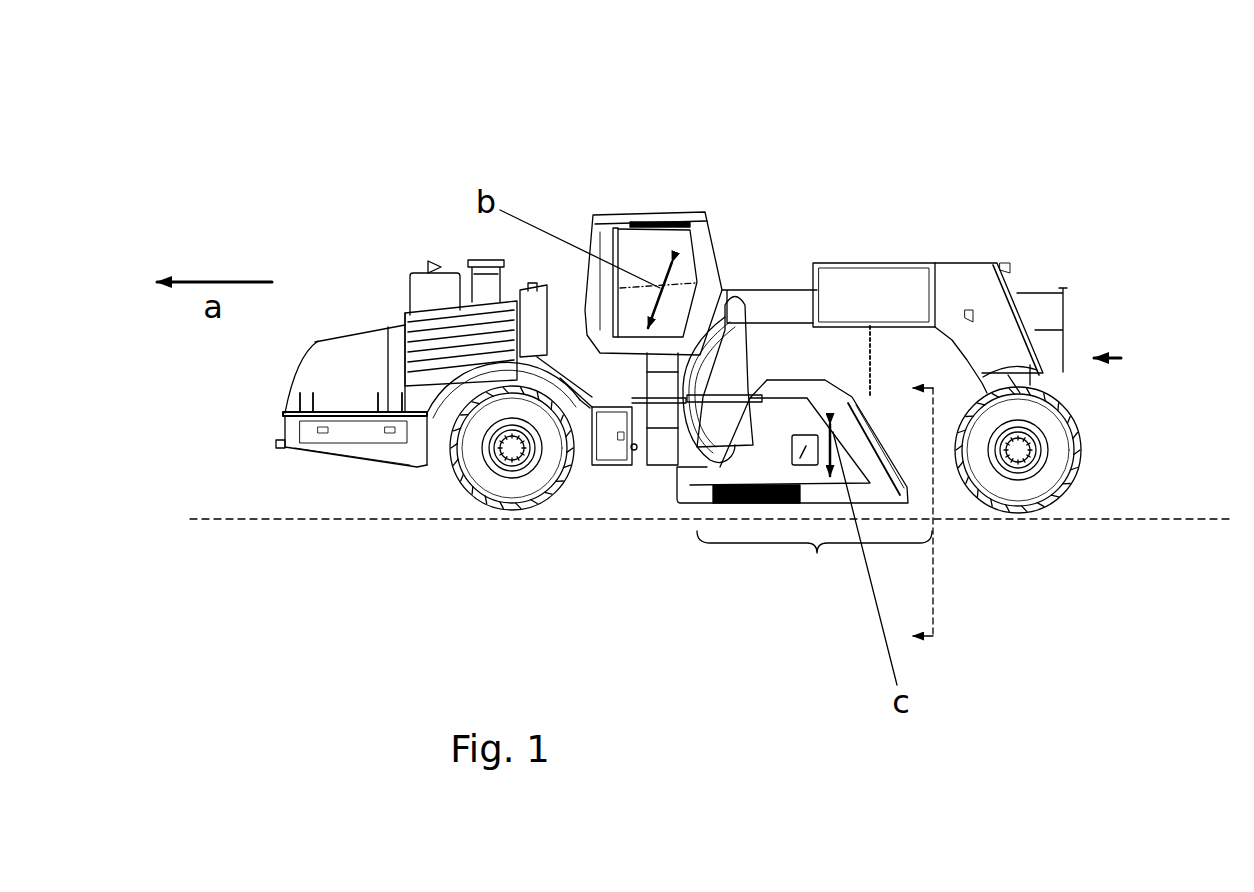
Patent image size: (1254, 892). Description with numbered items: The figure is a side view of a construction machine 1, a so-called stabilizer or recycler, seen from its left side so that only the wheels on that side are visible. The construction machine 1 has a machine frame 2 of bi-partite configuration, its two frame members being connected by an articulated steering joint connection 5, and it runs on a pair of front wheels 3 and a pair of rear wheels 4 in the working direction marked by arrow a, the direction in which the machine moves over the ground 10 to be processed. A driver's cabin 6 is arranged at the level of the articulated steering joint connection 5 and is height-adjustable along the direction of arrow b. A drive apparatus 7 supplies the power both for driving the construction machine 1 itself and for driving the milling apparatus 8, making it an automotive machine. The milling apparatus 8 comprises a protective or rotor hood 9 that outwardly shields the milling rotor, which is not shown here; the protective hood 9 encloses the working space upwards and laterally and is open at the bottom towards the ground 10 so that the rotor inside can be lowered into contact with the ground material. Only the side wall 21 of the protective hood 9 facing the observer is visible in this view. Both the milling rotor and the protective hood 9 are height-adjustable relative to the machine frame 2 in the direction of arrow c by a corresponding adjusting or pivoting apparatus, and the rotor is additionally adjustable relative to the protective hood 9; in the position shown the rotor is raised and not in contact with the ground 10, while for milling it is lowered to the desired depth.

The construction machine 1 is at (1055, 243).
The machine frame 2 is at (792, 307).
The front wheels 3 is at (497, 472).
The rear wheels 4 is at (1053, 485).
The articulated steering joint connection 5 is at (636, 450).
The driver's cabin 6 is at (637, 247).
The drive apparatus 7 is at (425, 368).
The milling apparatus 8 is at (814, 538).
The protective hood 9 is at (870, 473).
The ground 10 is at (212, 521).
The side wall 21 is at (815, 473).